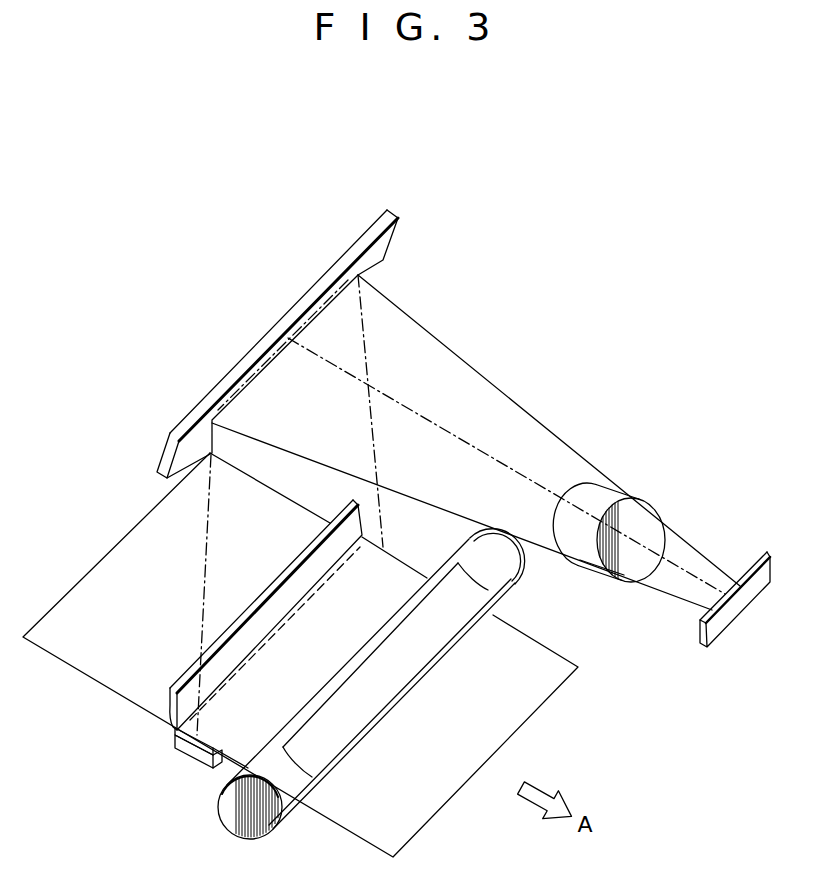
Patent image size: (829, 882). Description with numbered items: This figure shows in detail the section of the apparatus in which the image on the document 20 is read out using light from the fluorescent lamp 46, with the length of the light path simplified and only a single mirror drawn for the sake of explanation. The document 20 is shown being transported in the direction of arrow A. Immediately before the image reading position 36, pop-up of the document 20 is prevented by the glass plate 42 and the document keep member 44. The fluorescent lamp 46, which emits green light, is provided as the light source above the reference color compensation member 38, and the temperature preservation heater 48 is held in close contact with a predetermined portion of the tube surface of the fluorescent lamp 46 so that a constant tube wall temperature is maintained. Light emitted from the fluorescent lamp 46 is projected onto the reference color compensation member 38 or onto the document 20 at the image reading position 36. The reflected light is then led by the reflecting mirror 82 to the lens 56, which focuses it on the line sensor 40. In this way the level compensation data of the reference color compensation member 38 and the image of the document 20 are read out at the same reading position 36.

The document 20 is at (120, 543).
The reflecting mirror 82 is at (281, 318).
The image reading position 36 is at (317, 618).
The document keep member 44 is at (171, 700).
The glass plate 42 is at (174, 736).
The reference color compensation member 38 is at (190, 758).
The temperature preservation heater 48 is at (475, 604).
The fluorescent lamp 46 is at (297, 810).
The lens 56 is at (620, 498).
The line sensor 40 is at (722, 622).